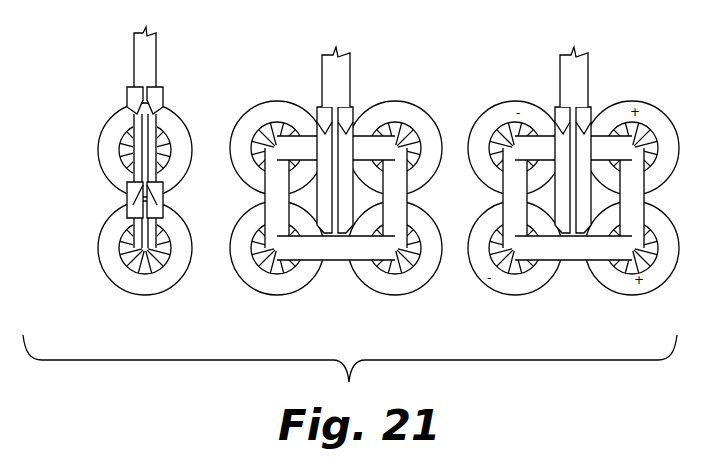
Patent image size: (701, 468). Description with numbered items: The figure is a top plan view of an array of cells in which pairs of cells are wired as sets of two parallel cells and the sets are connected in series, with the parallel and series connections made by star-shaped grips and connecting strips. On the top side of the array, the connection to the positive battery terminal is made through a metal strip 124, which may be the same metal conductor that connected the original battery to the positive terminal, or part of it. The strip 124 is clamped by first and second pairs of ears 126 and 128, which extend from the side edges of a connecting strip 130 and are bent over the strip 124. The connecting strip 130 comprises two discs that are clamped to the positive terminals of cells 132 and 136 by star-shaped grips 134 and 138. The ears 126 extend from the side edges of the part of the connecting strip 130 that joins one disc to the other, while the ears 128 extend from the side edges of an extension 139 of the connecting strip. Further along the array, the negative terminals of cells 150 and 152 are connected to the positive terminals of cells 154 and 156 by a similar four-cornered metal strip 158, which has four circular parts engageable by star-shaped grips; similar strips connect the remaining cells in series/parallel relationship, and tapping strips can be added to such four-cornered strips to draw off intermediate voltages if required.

The metal strip 124 is at (138, 58).
The second pair of ears 128 is at (135, 100).
The cell 132 is at (98, 141).
The first pair of ears 126 is at (128, 205).
The star-shaped grip 138 is at (119, 248).
The cell 136 is at (135, 293).
The extension 139 is at (158, 148).
The star-shaped grip 134 is at (172, 148).
The connecting strip 130 is at (163, 209).
The cell 150 is at (303, 110).
The cell 154 is at (410, 112).
The cell 152 is at (264, 290).
The cell 156 is at (402, 290).
The four-cornered metal strip 158 is at (339, 182).